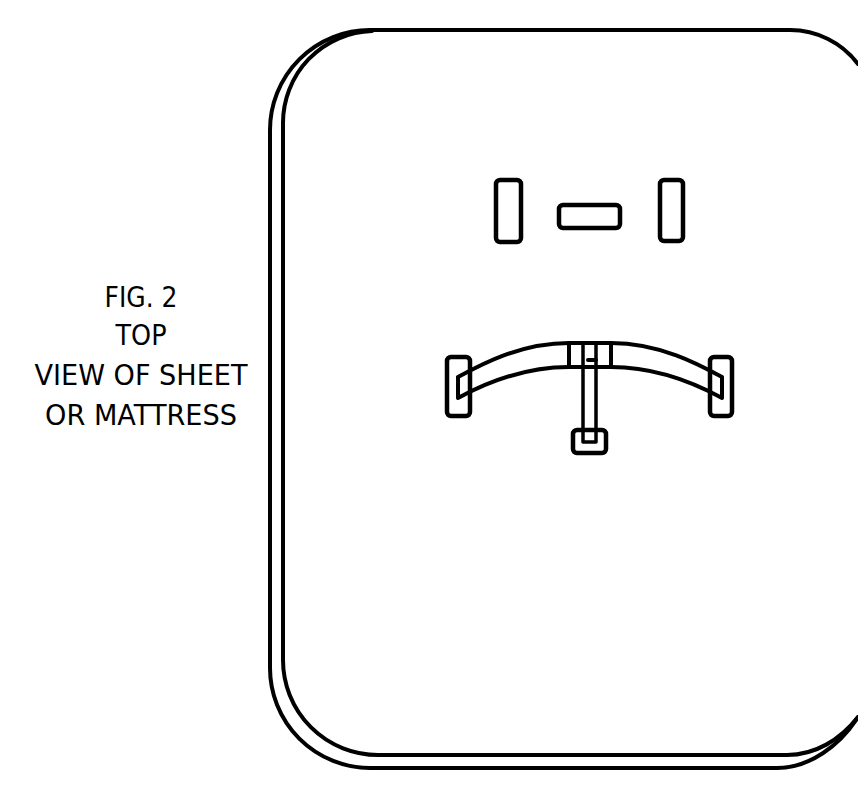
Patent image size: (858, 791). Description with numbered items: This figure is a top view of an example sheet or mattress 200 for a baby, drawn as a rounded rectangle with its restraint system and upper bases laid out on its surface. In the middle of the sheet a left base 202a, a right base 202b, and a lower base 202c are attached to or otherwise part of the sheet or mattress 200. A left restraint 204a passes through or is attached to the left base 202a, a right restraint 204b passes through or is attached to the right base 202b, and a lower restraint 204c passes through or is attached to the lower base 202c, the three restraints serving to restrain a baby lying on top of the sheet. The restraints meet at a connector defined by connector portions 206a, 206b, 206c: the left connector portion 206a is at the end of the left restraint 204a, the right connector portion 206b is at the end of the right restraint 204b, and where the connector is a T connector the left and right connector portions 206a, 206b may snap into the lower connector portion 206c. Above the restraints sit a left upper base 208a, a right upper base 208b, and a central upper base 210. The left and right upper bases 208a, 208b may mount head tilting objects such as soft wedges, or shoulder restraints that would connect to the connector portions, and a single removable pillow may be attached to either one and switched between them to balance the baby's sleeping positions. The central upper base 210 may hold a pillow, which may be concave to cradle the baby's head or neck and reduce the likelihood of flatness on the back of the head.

The sheet or mattress 200 is at (598, 89).
The left base 202a is at (458, 403).
The right base 202b is at (722, 405).
The lower base 202c is at (600, 448).
The left restraint 204a is at (490, 362).
The right restraint 204b is at (683, 362).
The lower restraint 204c is at (588, 380).
The left connector portion 206a is at (580, 350).
The right connector portion 206b is at (603, 357).
The lower connector portion 206c is at (590, 360).
The left upper base 208a is at (505, 212).
The right upper base 208b is at (670, 212).
The central upper base 210 is at (583, 215).